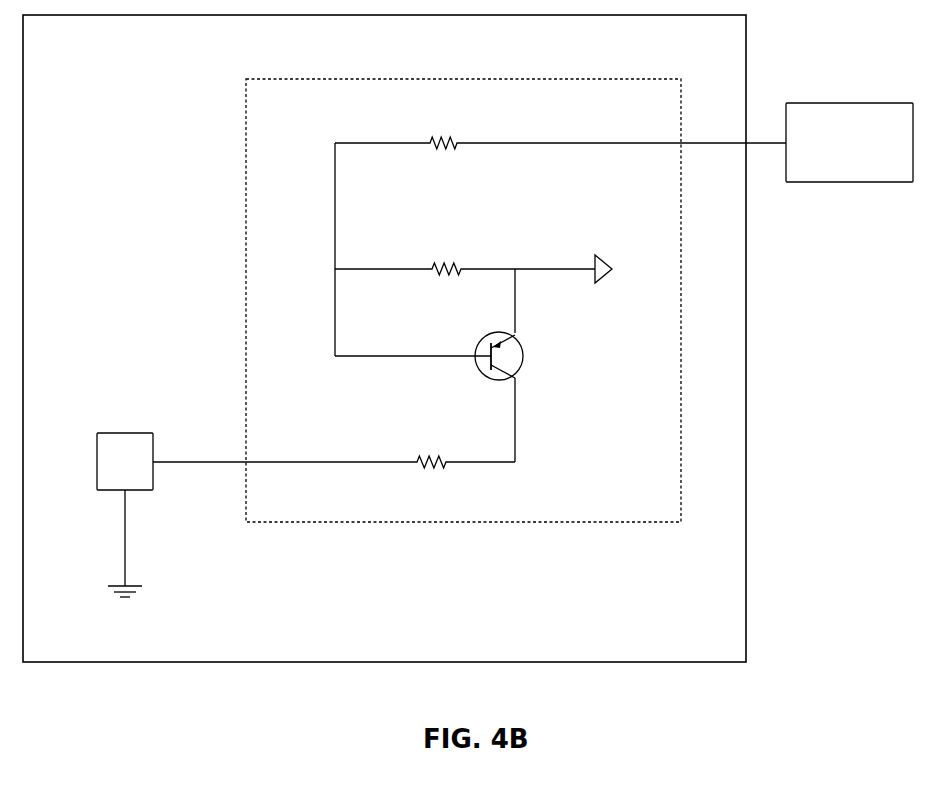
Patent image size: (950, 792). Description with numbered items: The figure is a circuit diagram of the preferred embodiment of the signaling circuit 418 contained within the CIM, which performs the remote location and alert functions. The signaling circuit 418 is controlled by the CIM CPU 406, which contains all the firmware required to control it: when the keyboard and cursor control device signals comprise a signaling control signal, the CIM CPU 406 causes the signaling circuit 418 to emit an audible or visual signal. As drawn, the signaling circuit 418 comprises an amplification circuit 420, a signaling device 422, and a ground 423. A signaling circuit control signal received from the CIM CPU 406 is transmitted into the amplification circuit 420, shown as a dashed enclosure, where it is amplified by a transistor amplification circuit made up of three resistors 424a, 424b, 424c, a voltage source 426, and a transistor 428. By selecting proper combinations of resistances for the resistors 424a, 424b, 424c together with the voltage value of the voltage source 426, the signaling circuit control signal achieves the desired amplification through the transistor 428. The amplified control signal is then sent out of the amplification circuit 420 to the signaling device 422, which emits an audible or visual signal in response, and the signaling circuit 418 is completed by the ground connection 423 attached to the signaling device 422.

The signaling circuit 418 is at (147, 681).
The amplification circuit 420 is at (463, 289).
The CIM CPU 406 is at (829, 142).
The signaling device 422 is at (125, 461).
The ground 423 is at (122, 558).
The resistor 424a is at (441, 156).
The resistor 424b is at (443, 282).
The resistor 424c is at (431, 476).
The voltage source 426 is at (595, 257).
The transistor 428 is at (517, 356).